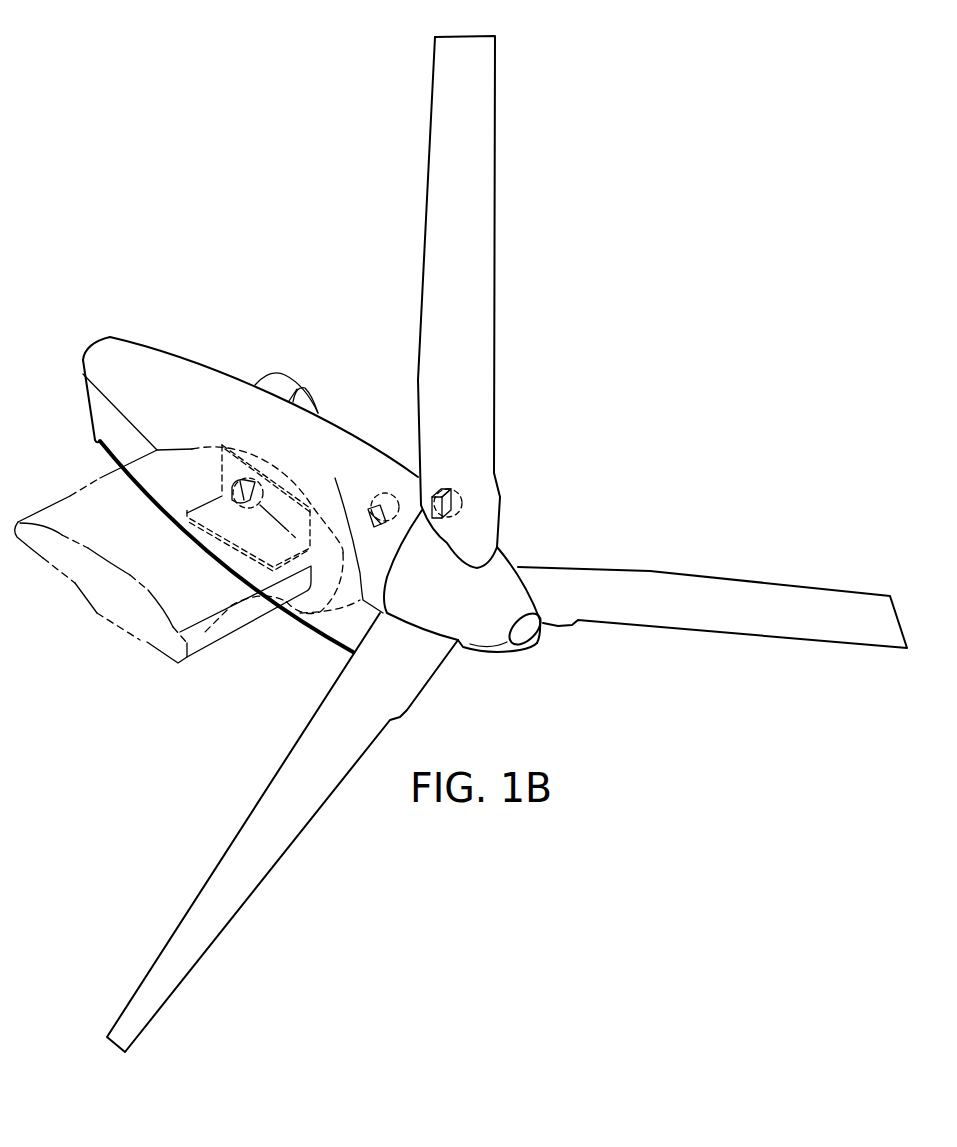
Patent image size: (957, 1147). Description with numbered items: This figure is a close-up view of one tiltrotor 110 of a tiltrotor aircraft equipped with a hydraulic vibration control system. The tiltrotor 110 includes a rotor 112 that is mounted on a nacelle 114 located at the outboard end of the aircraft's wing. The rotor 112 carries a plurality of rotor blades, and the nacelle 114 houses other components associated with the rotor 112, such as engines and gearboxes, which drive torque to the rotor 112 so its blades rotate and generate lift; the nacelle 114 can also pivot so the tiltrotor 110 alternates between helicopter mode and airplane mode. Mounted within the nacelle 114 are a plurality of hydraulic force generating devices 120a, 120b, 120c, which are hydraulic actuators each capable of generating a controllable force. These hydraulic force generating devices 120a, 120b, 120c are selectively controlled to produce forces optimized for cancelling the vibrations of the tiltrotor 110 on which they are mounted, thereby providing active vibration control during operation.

The tiltrotor 110 is at (461, 544).
The rotor 112 is at (487, 657).
The nacelle 114 is at (227, 374).
The hydraulic force generating device 120a is at (275, 470).
The hydraulic force generating device 120b is at (387, 495).
The hydraulic force generating device 120c is at (462, 501).